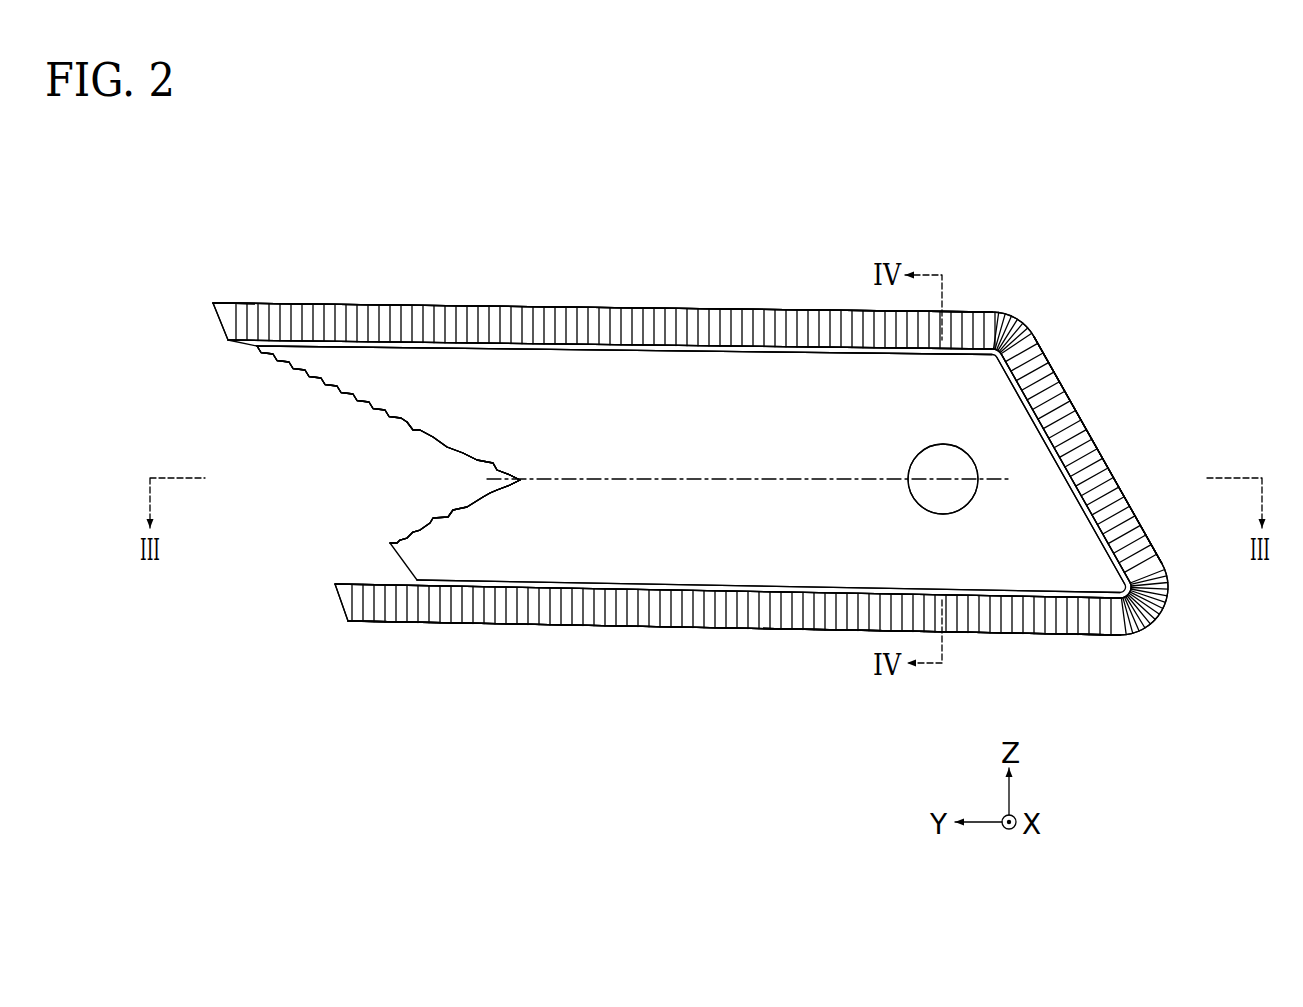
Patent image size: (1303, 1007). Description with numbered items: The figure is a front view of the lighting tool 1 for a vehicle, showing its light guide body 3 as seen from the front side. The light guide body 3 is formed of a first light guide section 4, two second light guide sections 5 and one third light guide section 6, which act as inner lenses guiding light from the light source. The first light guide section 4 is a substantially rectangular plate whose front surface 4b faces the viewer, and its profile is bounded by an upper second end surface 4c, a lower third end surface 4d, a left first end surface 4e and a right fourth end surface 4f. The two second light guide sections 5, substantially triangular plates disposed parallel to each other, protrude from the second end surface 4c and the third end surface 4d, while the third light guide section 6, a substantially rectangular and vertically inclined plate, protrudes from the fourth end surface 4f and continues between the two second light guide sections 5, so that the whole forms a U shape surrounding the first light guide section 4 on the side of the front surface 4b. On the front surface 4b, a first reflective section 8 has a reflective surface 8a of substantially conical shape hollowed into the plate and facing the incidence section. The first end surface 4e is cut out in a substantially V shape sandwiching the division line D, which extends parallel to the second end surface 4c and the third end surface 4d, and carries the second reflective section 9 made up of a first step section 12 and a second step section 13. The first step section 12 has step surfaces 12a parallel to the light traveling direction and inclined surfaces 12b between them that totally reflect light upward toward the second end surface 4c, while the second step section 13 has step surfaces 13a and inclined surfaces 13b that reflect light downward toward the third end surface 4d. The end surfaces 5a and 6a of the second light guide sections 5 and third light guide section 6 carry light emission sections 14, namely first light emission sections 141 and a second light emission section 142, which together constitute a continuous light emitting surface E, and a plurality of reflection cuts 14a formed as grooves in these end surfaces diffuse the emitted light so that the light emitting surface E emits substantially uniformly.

The lighting tool for a vehicle 1 is at (290, 228).
The light guide body 3 is at (1010, 270).
The first light guide section 4 is at (413, 377).
The front surface 4b is at (490, 398).
The second end surface 4c is at (587, 334).
The third end surface 4d is at (760, 592).
The first end surface 4e is at (467, 471).
The fourth end surface 4f is at (1017, 397).
The second light guide section 5 is at (630, 306).
The end surface 5a is at (685, 325).
The third light guide section 6 is at (1123, 490).
The end surface 6a is at (1065, 423).
The first reflective section 8 is at (945, 492).
The reflective surface 8a is at (945, 492).
The second reflective section 9 is at (250, 388).
The first step section 12 is at (250, 472).
The step surface 12a is at (413, 430).
The inclined surface 12b is at (403, 421).
The second step section 13 is at (280, 567).
The step surface 13a is at (447, 512).
The inclined surface 13b is at (463, 507).
The light emission section 14 is at (790, 325).
The first light emission section 141 is at (568, 615).
The second light emission section 142 is at (1088, 447).
The reflection cut 14a is at (738, 330).
The light emitting surface E is at (790, 325).
The division line D is at (703, 476).